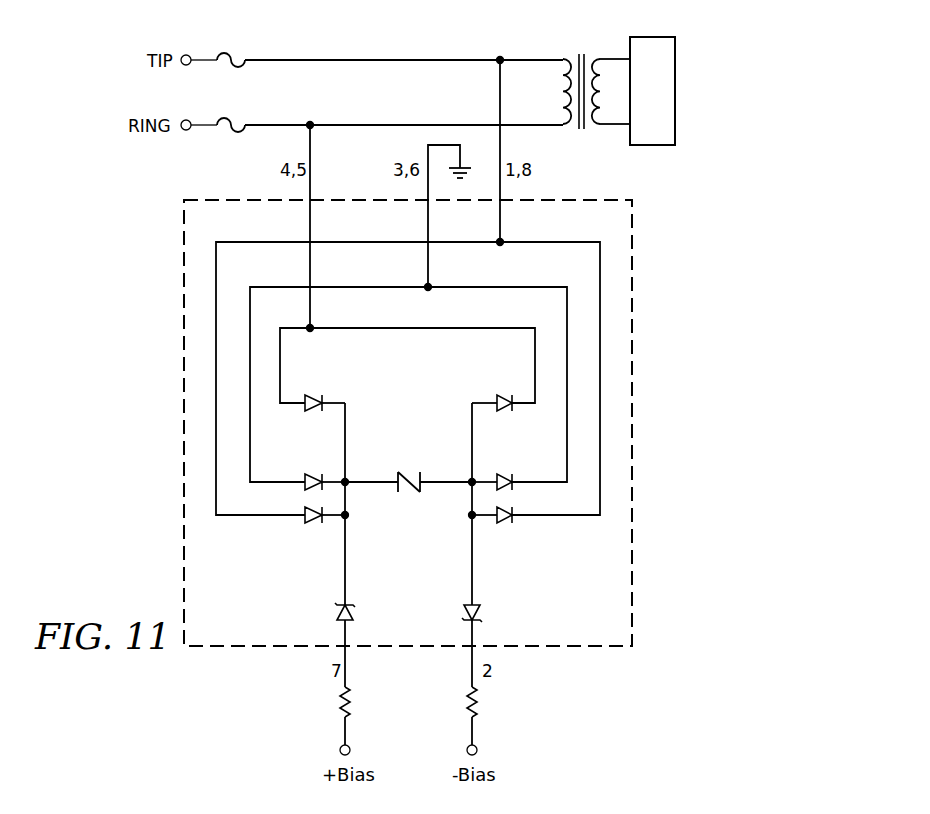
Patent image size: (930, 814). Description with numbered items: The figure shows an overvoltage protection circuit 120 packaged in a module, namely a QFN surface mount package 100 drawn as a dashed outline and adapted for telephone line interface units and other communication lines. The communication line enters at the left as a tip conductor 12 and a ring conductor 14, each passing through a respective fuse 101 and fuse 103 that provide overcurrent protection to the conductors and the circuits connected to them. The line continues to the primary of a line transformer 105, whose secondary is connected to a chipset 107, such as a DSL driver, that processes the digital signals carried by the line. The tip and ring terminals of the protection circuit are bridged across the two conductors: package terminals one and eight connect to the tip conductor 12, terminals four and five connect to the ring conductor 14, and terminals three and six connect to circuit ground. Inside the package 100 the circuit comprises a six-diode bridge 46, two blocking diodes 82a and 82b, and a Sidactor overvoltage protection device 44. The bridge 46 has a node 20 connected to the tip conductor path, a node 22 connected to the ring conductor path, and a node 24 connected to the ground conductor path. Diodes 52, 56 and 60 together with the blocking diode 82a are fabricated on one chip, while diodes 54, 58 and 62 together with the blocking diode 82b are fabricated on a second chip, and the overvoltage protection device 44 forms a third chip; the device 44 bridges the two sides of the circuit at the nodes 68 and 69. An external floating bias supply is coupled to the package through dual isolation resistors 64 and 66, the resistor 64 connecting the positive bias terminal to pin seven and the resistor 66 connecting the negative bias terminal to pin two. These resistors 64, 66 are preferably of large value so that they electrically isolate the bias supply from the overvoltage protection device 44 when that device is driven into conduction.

The tip conductor 12 is at (310, 58).
The ring conductor 14 is at (397, 123).
The node 20 is at (505, 241).
The node 22 is at (316, 327).
The node 24 is at (432, 286).
The Sidactor overvoltage protection device 44 is at (403, 470).
The six-diode bridge 46 is at (426, 407).
The diode 52 is at (318, 525).
The diode 54 is at (508, 525).
The diode 56 is at (318, 395).
The diode 58 is at (508, 395).
The diode 60 is at (318, 474).
The diode 62 is at (508, 474).
The isolation resistor 64 is at (342, 708).
The isolation resistor 66 is at (477, 706).
The positive node 68 is at (350, 487).
The negative node 69 is at (468, 478).
The blocking diode 82a is at (336, 612).
The blocking diode 82b is at (481, 612).
The QFN surface mount package 100 is at (634, 348).
The fuse 101 is at (227, 52).
The fuse 103 is at (232, 133).
The line transformer 105 is at (583, 50).
The chipset 107 is at (675, 82).
The overvoltage protection circuit 120 is at (263, 551).